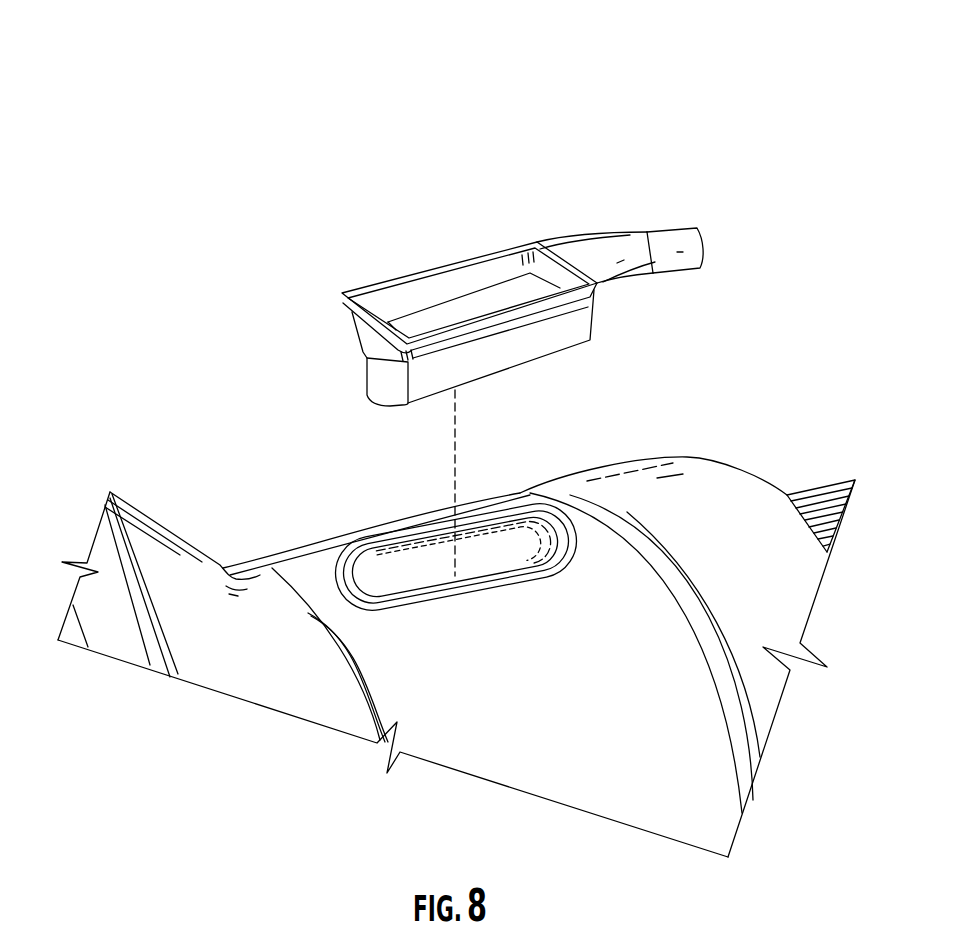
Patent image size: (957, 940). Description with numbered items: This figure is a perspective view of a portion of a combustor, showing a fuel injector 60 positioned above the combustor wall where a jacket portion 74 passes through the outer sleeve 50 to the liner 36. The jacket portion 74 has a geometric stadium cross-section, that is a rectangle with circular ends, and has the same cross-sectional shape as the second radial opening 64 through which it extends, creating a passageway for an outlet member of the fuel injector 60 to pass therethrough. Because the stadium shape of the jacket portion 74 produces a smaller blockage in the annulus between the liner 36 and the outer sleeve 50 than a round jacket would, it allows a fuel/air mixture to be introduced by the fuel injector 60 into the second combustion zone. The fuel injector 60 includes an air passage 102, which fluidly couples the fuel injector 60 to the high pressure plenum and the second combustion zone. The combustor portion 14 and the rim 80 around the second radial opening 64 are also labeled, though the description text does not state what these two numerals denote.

The console 14 is at (167, 210).
The seat cushion portion 36 is at (815, 487).
The upper surface of console 50 is at (717, 495).
The storage insert assembly 60 is at (480, 121).
The slot 64 is at (363, 603).
The rim 74 is at (343, 577).
The opening 80 is at (410, 543).
The receptacle 102 is at (449, 281).